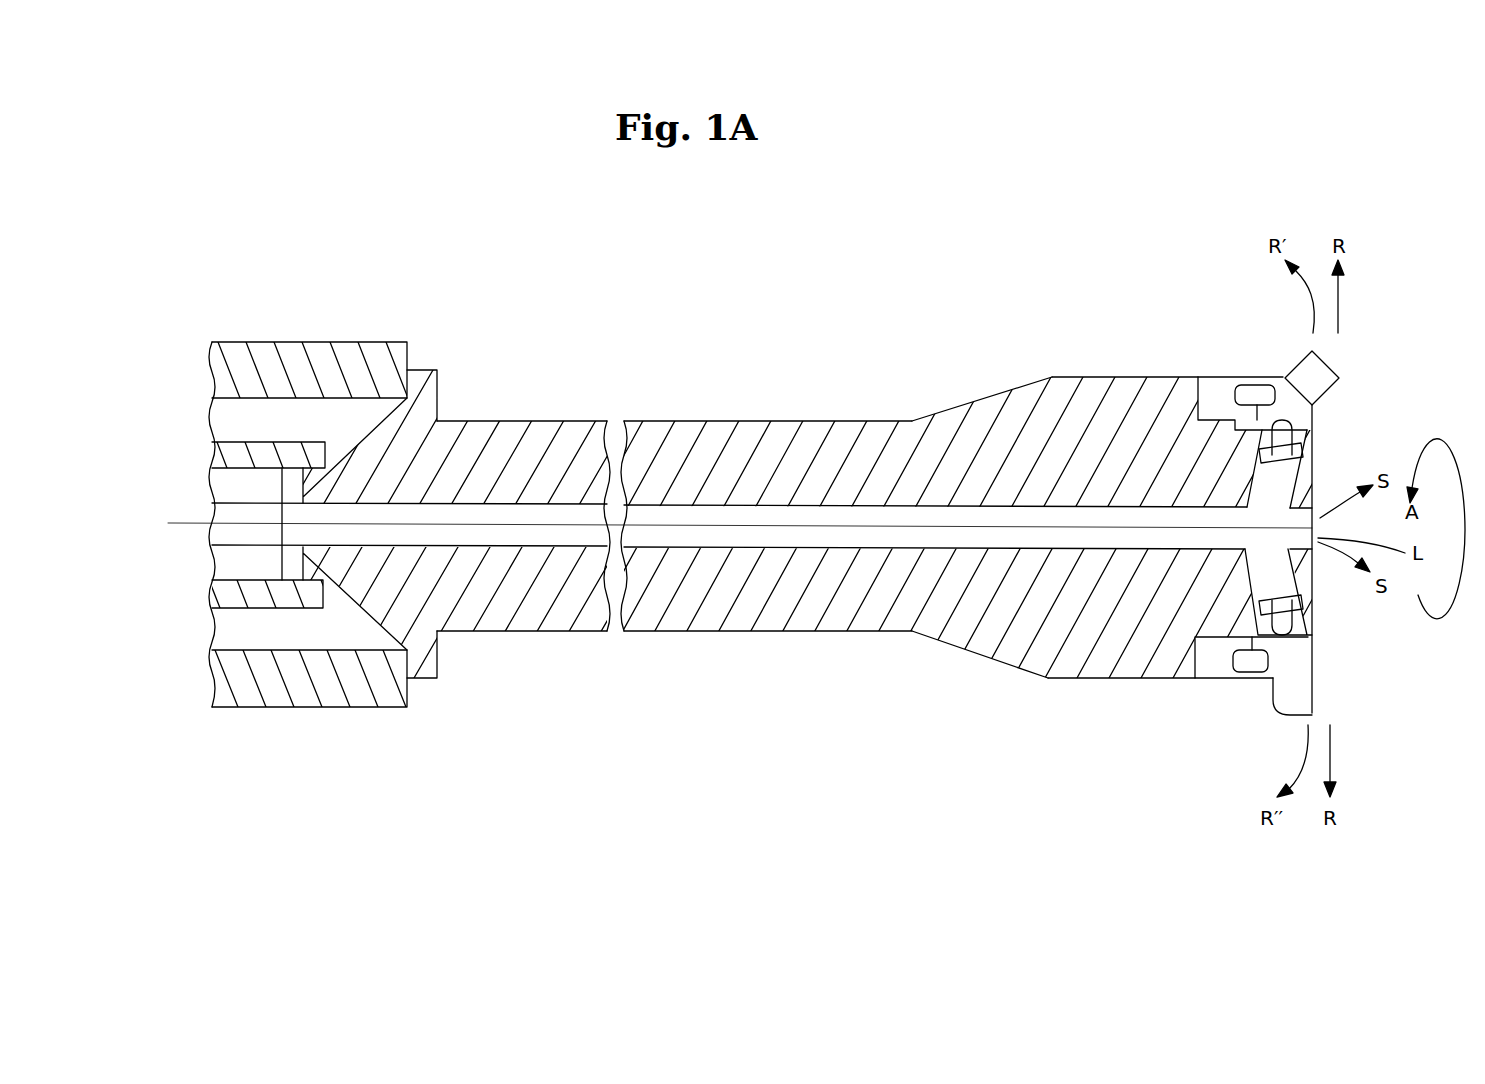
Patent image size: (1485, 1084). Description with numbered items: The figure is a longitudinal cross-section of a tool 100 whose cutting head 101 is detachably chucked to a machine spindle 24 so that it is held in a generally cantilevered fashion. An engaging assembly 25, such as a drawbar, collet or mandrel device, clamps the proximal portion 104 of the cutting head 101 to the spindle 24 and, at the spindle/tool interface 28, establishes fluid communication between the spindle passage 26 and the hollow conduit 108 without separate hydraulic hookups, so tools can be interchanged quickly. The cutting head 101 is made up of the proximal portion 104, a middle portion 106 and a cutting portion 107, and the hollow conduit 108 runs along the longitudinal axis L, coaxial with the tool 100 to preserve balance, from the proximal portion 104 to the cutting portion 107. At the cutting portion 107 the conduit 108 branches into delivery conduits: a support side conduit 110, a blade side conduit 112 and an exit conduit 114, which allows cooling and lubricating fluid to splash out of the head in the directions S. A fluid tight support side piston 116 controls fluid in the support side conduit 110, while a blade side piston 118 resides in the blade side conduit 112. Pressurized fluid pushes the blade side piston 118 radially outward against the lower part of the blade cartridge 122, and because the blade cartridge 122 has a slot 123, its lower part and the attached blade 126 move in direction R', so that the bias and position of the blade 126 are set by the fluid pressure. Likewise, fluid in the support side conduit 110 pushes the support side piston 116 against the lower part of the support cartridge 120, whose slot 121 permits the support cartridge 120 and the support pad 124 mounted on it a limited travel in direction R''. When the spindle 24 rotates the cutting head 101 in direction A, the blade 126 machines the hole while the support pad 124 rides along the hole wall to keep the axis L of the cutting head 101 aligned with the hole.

The tool 100 is at (443, 206).
The cutting head 101 is at (875, 365).
The proximal portion 104 is at (453, 344).
The middle portion 106 is at (575, 378).
The cutting portion 107 is at (1076, 338).
The hollow conduit 108 is at (833, 507).
The support side conduit 110 is at (1310, 590).
The blade side conduit 112 is at (1310, 488).
The exit conduit 114 is at (1312, 545).
The support side piston 116 is at (1278, 625).
The blade side piston 118 is at (1265, 462).
The support cartridge 120 is at (1215, 680).
The slot 121 is at (1247, 673).
The blade cartridge 122 is at (1215, 354).
The slot 123 is at (1296, 388).
The support pad 124 is at (1303, 712).
The blade 126 is at (1328, 363).
The machine spindle 24 is at (292, 309).
The engaging assembly 25 is at (268, 340).
The spindle passage 26 is at (242, 548).
The spindle/tool interface 28 is at (263, 607).